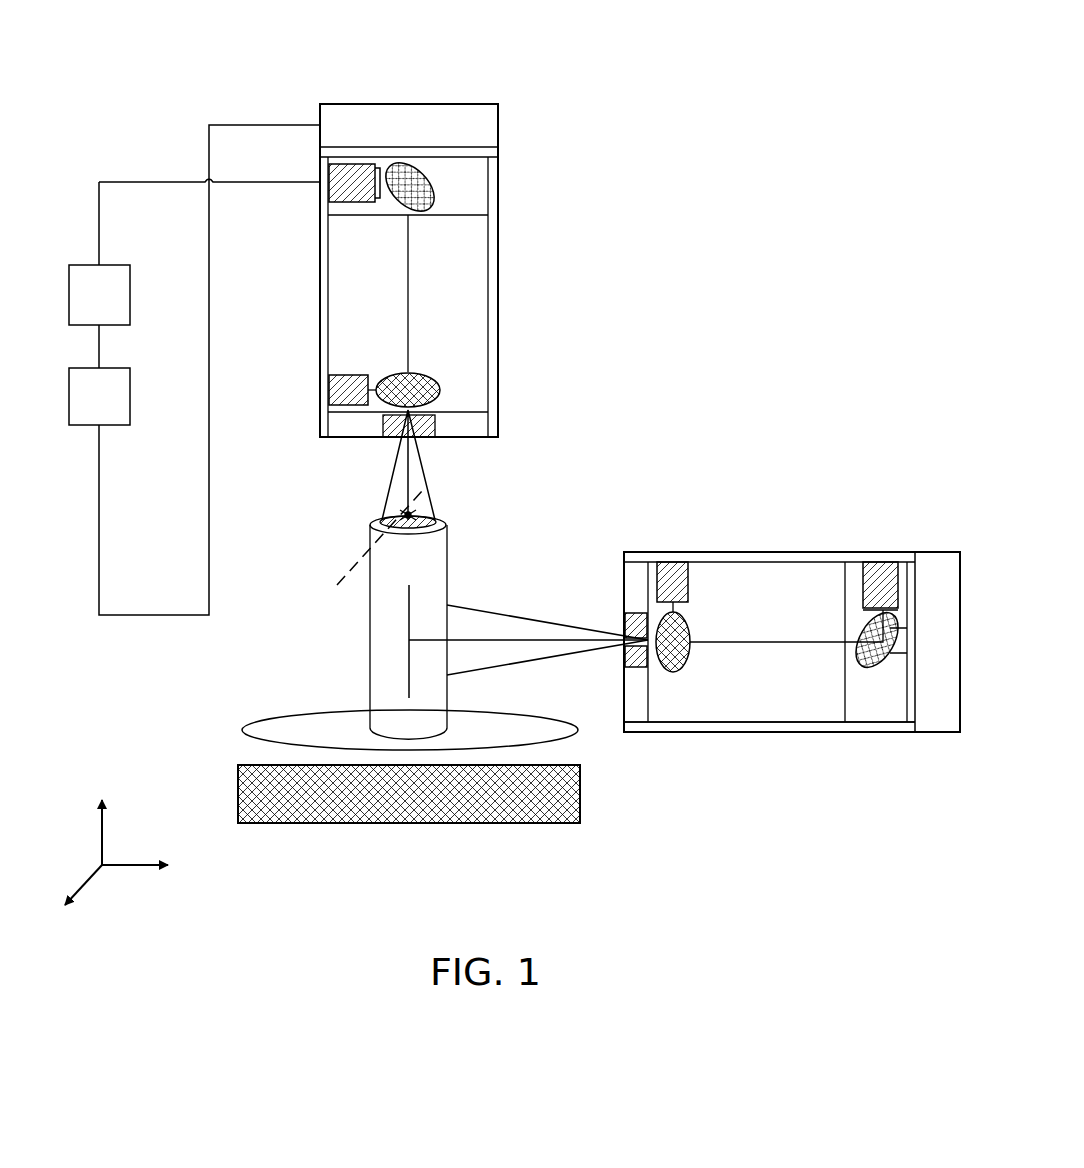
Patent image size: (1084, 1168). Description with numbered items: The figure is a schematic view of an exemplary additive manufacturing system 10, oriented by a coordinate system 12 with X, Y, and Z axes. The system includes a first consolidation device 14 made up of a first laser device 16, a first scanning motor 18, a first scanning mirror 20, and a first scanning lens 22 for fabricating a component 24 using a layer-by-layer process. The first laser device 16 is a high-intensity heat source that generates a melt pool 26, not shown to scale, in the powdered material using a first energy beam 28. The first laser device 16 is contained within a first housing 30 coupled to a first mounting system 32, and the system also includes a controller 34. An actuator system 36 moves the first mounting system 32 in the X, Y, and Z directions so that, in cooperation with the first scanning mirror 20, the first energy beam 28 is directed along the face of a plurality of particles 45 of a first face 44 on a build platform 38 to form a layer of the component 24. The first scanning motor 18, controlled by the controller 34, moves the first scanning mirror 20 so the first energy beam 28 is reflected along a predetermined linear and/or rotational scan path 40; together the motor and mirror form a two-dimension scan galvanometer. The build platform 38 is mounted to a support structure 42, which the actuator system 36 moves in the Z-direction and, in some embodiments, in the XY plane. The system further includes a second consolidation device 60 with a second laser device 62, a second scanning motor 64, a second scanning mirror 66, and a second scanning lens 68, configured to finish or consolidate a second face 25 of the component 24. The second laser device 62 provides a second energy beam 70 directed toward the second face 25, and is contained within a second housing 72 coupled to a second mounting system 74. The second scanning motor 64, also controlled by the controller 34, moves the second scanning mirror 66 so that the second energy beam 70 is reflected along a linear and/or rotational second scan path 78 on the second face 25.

The additive manufacturing system 10 is at (716, 55).
The coordinate system 12 is at (68, 835).
The first consolidation device 14 is at (576, 225).
The first laser device 16 is at (329, 172).
The first scanning motor 18 is at (328, 375).
The first scanning mirror 20 is at (440, 388).
The first scanning lens 22 is at (428, 430).
The component 24 is at (385, 522).
The second face 25 is at (447, 568).
The melt pool 26 is at (415, 516).
The first energy beam 28 is at (408, 240).
The first housing 30 is at (498, 275).
The first mounting system 32 is at (486, 126).
The controller 34 is at (99, 295).
The actuator system 36 is at (194, 370).
The build platform 38 is at (552, 743).
The scan path 40 is at (360, 560).
The support structure 42 is at (580, 790).
The first face 44 is at (436, 520).
The plurality of particles 45 is at (412, 513).
The second consolidation device 60 is at (730, 478).
The second laser device 62 is at (885, 568).
The second scanning motor 64 is at (668, 570).
The second scanning mirror 66 is at (670, 682).
The second scanning lens 68 is at (640, 628).
The second energy beam 70 is at (754, 640).
The second housing 72 is at (772, 732).
The second mounting system 74 is at (930, 568).
The second scan path 78 is at (408, 665).